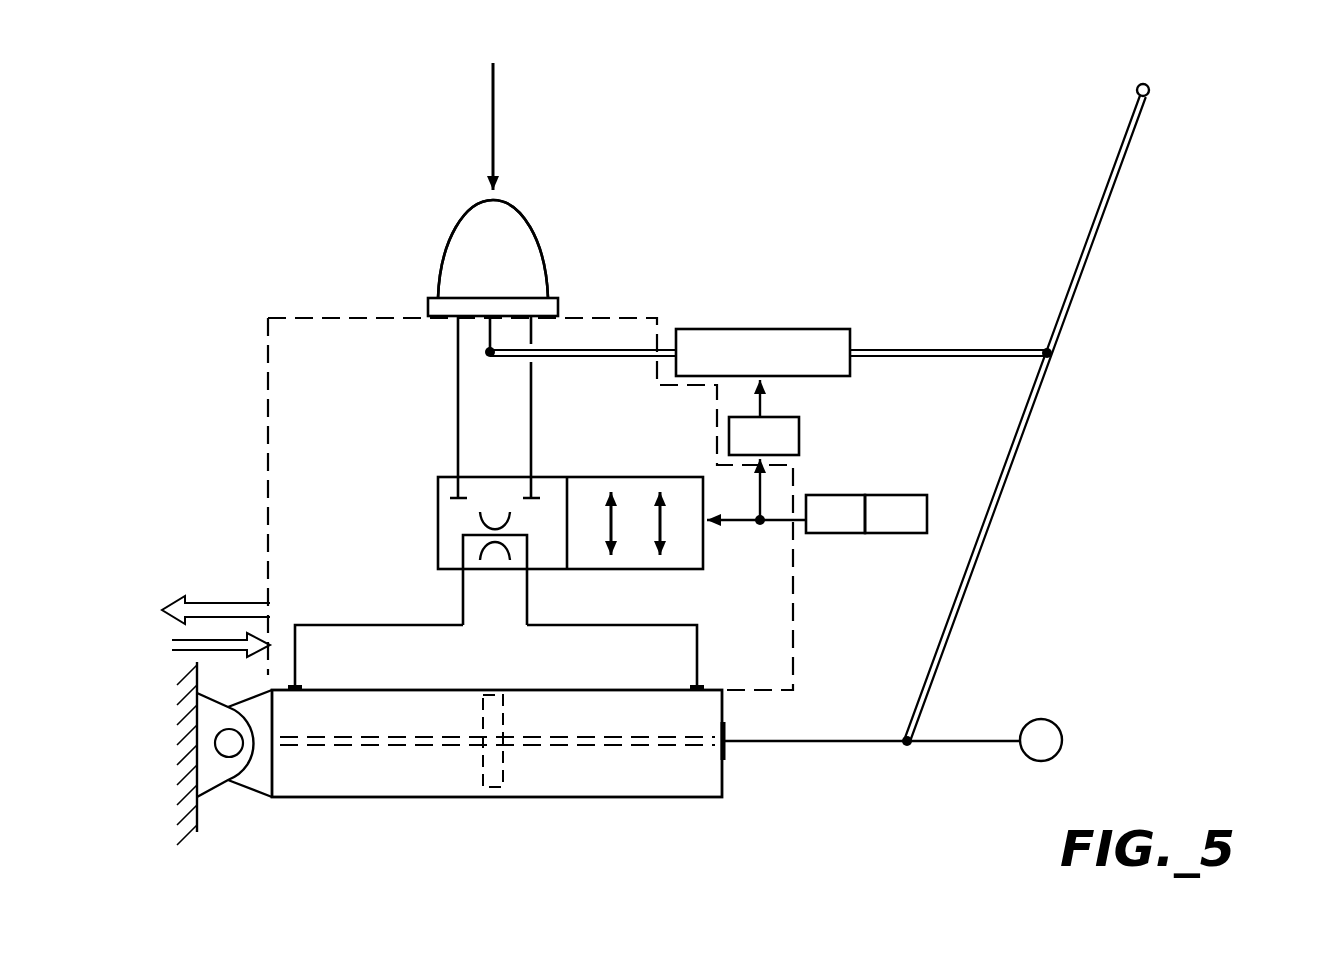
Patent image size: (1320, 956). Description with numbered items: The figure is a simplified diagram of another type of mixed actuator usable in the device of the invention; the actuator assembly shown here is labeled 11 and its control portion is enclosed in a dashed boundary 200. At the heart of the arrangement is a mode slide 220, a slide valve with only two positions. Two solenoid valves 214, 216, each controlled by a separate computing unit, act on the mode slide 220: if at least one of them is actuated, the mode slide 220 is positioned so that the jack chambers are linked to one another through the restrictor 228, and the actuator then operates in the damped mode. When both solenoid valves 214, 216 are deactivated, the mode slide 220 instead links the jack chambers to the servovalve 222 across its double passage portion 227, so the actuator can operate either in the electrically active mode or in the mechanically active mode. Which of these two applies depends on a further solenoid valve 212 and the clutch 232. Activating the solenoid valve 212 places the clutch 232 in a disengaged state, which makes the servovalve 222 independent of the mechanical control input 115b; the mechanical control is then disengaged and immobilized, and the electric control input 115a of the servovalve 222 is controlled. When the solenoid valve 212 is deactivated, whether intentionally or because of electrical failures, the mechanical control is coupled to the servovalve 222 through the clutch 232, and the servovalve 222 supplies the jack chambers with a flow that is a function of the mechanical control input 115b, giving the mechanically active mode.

The actuator 11 is at (578, 806).
The electric control input 115a is at (424, 250).
The mechanical control input 115b is at (1148, 130).
The control unit 200 is at (268, 350).
The solenoid valve 212 is at (772, 443).
The solenoid valve 214 is at (843, 518).
The solenoid valve 216 is at (905, 513).
The mode slide 220 is at (424, 474).
The servovalve 222 is at (515, 236).
The double passage portion 227 is at (637, 497).
The restrictor 228 is at (488, 512).
The clutch 232 is at (805, 336).